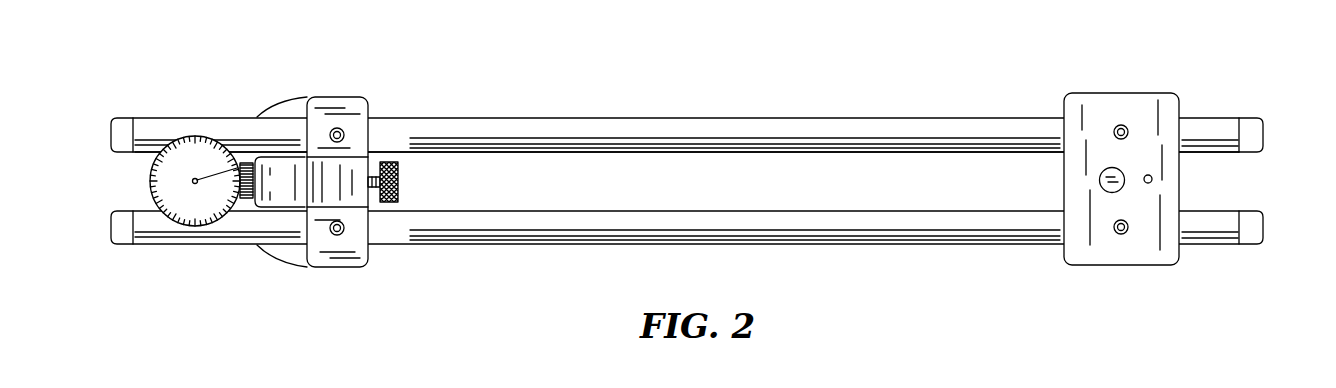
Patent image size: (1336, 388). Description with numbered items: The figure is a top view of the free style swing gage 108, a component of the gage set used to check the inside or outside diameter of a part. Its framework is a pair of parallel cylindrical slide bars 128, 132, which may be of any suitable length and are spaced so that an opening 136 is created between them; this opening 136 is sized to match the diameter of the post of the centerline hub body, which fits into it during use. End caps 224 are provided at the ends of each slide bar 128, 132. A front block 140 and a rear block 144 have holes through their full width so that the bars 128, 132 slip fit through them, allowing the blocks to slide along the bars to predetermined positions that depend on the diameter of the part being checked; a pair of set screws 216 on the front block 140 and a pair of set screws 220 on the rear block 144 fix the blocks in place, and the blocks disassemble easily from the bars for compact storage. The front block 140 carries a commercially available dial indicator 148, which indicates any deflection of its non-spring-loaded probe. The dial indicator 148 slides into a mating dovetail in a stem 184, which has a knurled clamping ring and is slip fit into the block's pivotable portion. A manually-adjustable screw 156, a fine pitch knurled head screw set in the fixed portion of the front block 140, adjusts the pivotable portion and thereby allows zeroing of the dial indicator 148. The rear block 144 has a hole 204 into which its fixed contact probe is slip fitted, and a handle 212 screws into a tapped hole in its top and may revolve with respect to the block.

The free style swing gage 108 is at (446, 94).
The cylindrical slide bar 128 is at (911, 115).
The cylindrical slide bar 132 is at (802, 242).
The opening 136 is at (633, 170).
The front block 140 is at (347, 97).
The rear block 144 is at (1154, 97).
The dial indicator 148 is at (150, 180).
The manually-adjustable screw 156 is at (398, 183).
The stem 184 is at (245, 157).
The hole 204 is at (1153, 179).
The handle 212 is at (1100, 180).
The set screws 216 is at (335, 128).
The set screws 220 is at (1121, 125).
The end caps 224 is at (122, 127).